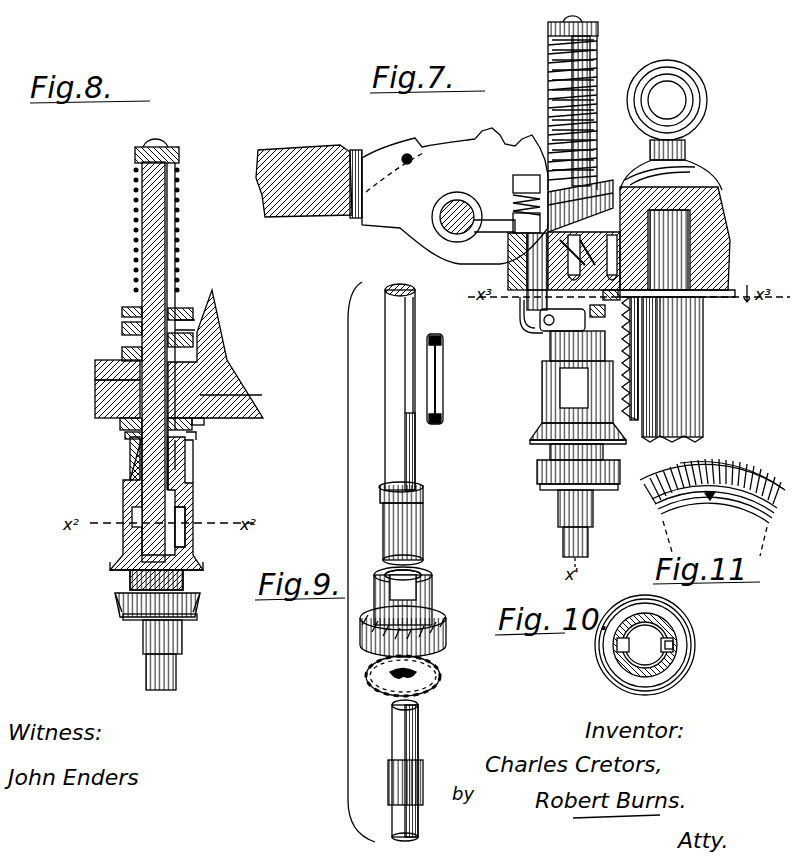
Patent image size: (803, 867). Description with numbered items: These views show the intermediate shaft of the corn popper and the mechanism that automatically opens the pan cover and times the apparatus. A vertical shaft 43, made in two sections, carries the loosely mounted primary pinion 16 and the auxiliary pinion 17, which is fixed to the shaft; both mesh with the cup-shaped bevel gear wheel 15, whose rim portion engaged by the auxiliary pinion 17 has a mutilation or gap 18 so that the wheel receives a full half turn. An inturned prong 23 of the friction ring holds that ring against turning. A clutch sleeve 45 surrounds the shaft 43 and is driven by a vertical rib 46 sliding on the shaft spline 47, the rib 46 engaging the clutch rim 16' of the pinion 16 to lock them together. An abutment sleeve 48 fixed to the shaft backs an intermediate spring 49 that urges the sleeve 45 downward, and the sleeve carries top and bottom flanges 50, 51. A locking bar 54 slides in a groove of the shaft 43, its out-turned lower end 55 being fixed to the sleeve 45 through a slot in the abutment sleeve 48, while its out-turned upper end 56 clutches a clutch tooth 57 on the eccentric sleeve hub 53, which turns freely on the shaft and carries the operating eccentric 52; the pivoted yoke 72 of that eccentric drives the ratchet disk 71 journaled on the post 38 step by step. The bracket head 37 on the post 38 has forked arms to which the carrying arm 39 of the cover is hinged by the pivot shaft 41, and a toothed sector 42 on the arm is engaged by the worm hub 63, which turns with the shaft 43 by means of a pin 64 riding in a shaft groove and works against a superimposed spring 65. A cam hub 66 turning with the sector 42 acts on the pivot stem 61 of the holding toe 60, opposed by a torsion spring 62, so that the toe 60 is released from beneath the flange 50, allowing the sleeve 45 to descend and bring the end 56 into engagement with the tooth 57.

In FIG. 11, the cup-shaped bevel gear wheel 15 is at (712, 510).
In FIG. 8, the primary pinion 16 is at (113, 605).
In FIG. 7, the primary pinion 16 is at (560, 472).
In FIG. 9, the primary pinion 16 is at (415, 631).
In FIG. 8, the clutch rim 16' is at (178, 579).
In FIG. 7, the clutch rim 16' is at (553, 450).
In FIG. 9, the clutch rim 16' is at (418, 596).
In FIG. 10, the clutch rim 16' is at (608, 645).
In FIG. 8, the auxiliary pinion 17 is at (123, 618).
In FIG. 7, the auxiliary pinion 17 is at (540, 488).
In FIG. 9, the auxiliary pinion 17 is at (440, 674).
In FIG. 11, the mutilation or gap 18 is at (692, 490).
In FIG. 11, the inturned prong 23 is at (712, 498).
In FIG. 8, the bracket head 37 is at (95, 397).
In FIG. 7, the bracket head 37 is at (728, 225).
In FIG. 7, the vertical post or standard 38 is at (705, 352).
In FIG. 7, the carrying arm 39 is at (312, 212).
In FIG. 7, the pivot shaft 41 is at (440, 232).
In FIG. 7, the toothed sector 42 is at (490, 150).
In FIG. 8, the vertical shaft 43 is at (142, 212).
In FIG. 7, the vertical shaft 43 is at (555, 80).
In FIG. 9, the vertical shaft 43 is at (392, 445).
In FIG. 10, the vertical shaft 43 is at (608, 672).
In FIG. 8, the clutch sleeve 45 is at (193, 500).
In FIG. 7, the clutch sleeve 45 is at (577, 377).
In FIG. 10, the clutch sleeve 45 is at (614, 660).
In FIG. 8, the vertical rib 46 is at (186, 520).
In FIG. 10, the vertical rib 46 is at (672, 640).
In FIG. 9, the rib or spline 47 is at (424, 492).
In FIG. 10, the rib or spline 47 is at (676, 649).
In FIG. 8, the abutment sleeve 48 is at (130, 462).
In FIG. 8, the intermediate spring 49 is at (130, 496).
In FIG. 8, the top circular flange 50 is at (125, 438).
In FIG. 7, the top circular flange 50 is at (520, 320).
In FIG. 8, the bottom circular flange 51 is at (112, 565).
In FIG. 7, the bottom circular flange 51 is at (540, 433).
In FIG. 8, the operating eccentric 52 is at (197, 440).
In FIG. 7, the operating eccentric 52 is at (603, 317).
In FIG. 8, the eccentric sleeve hub 53 is at (120, 423).
In FIG. 7, the eccentric sleeve hub 53 is at (508, 262).
In FIG. 8, the locking bar 54 is at (240, 392).
In FIG. 9, the locking bar 54 is at (443, 378).
In FIG. 8, the out-turned lower end 55 is at (180, 445).
In FIG. 9, the out-turned lower end 55 is at (443, 417).
In FIG. 8, the out-turned upper end 56 is at (222, 362).
In FIG. 7, the out-turned upper end 56 is at (593, 252).
In FIG. 9, the out-turned upper end 56 is at (443, 347).
In FIG. 8, the clutch tooth 57 is at (95, 377).
In FIG. 7, the holding toe 60 is at (562, 320).
In FIG. 7, the pivot stem 61 is at (527, 300).
In FIG. 7, the torsion spring 62 is at (513, 190).
In FIG. 8, the worm hub 63 is at (56, 327).
In FIG. 7, the worm hub 63 is at (590, 192).
In FIG. 8, the pin 64 is at (200, 325).
In FIG. 8, the superimposed spring 65 is at (180, 232).
In FIG. 7, the superimposed spring 65 is at (595, 72).
In FIG. 7, the cam hub 66 is at (458, 200).
In FIG. 7, the ratchet disk 71 is at (638, 344).
In FIG. 8, the pivoted yoke 72 is at (205, 428).
In FIG. 7, the pivoted yoke 72 is at (622, 296).